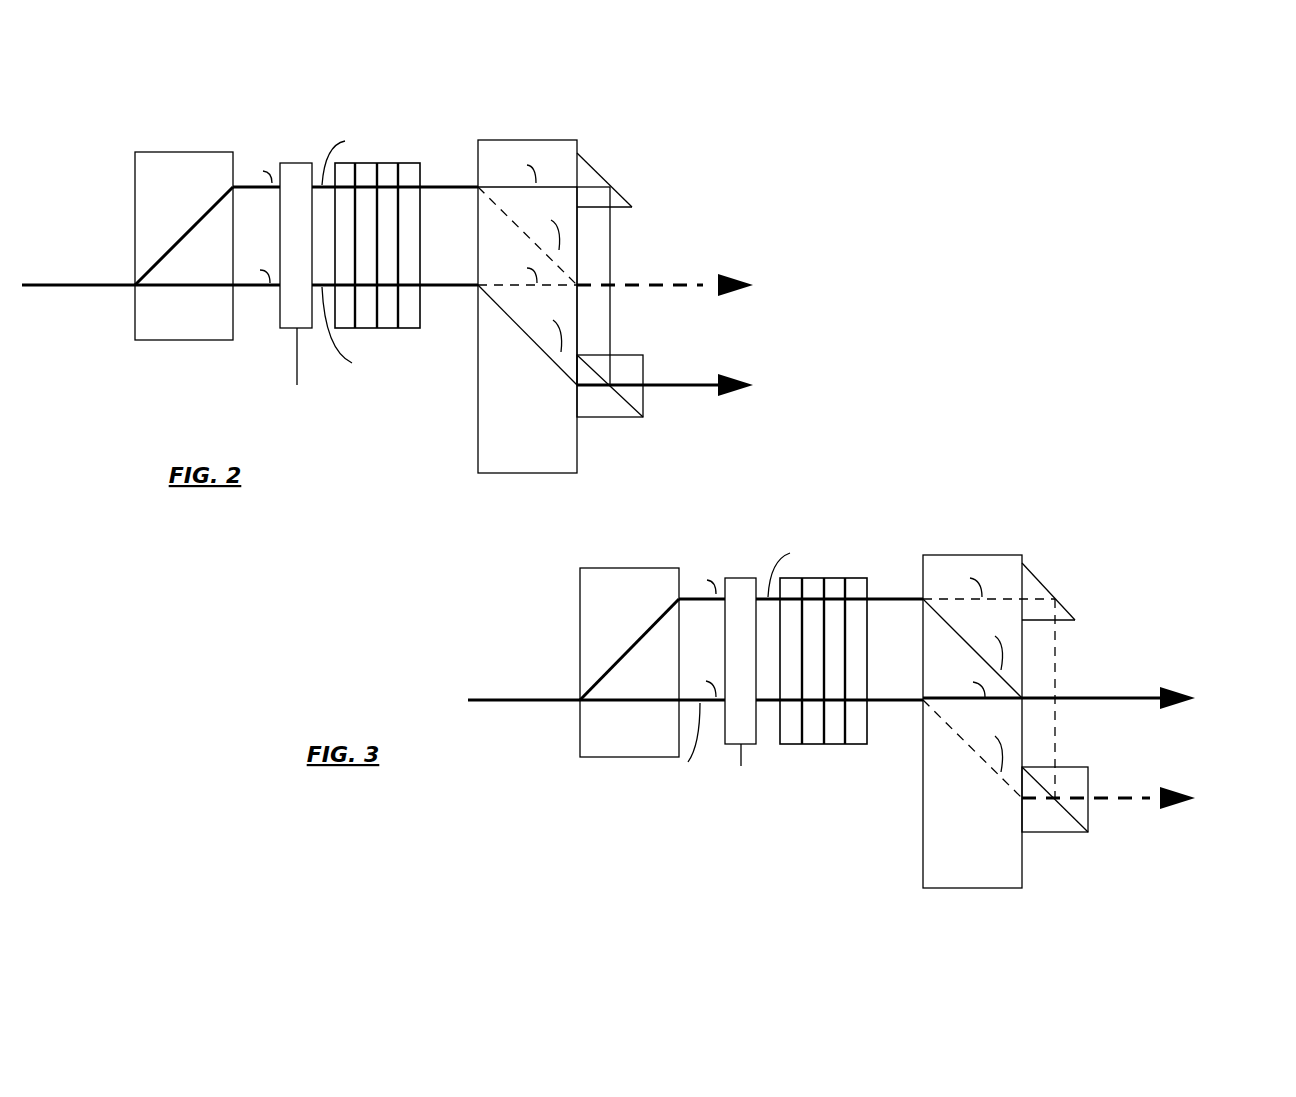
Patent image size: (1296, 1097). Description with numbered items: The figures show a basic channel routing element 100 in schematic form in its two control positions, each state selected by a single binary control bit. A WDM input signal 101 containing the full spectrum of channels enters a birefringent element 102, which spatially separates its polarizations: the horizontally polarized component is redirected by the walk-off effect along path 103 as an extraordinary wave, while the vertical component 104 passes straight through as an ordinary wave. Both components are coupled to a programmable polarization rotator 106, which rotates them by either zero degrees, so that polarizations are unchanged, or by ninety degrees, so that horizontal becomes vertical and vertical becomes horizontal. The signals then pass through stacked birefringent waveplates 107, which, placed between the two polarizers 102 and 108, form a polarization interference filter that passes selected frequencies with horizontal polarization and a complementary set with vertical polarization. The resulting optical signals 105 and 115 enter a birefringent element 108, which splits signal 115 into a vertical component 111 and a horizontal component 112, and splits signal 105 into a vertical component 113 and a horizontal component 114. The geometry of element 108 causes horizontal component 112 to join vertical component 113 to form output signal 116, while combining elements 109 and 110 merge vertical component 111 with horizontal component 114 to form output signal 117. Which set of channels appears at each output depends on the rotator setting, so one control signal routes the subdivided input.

In FIG. 2, the basic channel routing element 100 is at (533, 134).
In FIG. 3, the basic channel routing element 100 is at (907, 500).
In FIG. 2, the WDM input signal 101 is at (93, 268).
In FIG. 3, the WDM input signal 101 is at (537, 683).
In FIG. 2, the birefringent element 102 is at (192, 152).
In FIG. 3, the birefringent element 102 is at (580, 745).
In FIG. 2, the horizontal component path 103 is at (193, 222).
In FIG. 3, the horizontal component path 103 is at (638, 637).
In FIG. 2, the vertical component 104 is at (200, 292).
In FIG. 3, the vertical component 104 is at (645, 707).
In FIG. 2, the optical signal 105 is at (464, 290).
In FIG. 3, the optical signal 105 is at (912, 702).
In FIG. 2, the polarization rotator 106 is at (302, 162).
In FIG. 3, the polarization rotator 106 is at (741, 577).
In FIG. 2, the stacked birefringent waveplates 107 is at (389, 360).
In FIG. 3, the stacked birefringent waveplates 107 is at (800, 765).
In FIG. 2, the birefringent element 108 is at (483, 503).
In FIG. 3, the birefringent element 108 is at (1030, 857).
In FIG. 2, the combining element 109 is at (626, 203).
In FIG. 3, the combining element 109 is at (1072, 617).
In FIG. 2, the combining element 110 is at (610, 420).
In FIG. 3, the combining element 110 is at (1090, 812).
In FIG. 2, the vertical component 111 is at (590, 180).
In FIG. 3, the vertical component 111 is at (1035, 592).
In FIG. 2, the horizontal component 112 is at (566, 268).
In FIG. 3, the horizontal component 112 is at (1012, 685).
In FIG. 2, the vertical component 113 is at (566, 296).
In FIG. 3, the vertical component 113 is at (1010, 702).
In FIG. 2, the horizontal component 114 is at (527, 335).
In FIG. 3, the horizontal component 114 is at (990, 782).
In FIG. 2, the optical signal 115 is at (456, 184).
In FIG. 3, the optical signal 115 is at (900, 597).
In FIG. 2, the output signal 116 is at (700, 283).
In FIG. 3, the output signal 116 is at (1143, 697).
In FIG. 2, the output signal 117 is at (700, 383).
In FIG. 3, the output signal 117 is at (1146, 797).